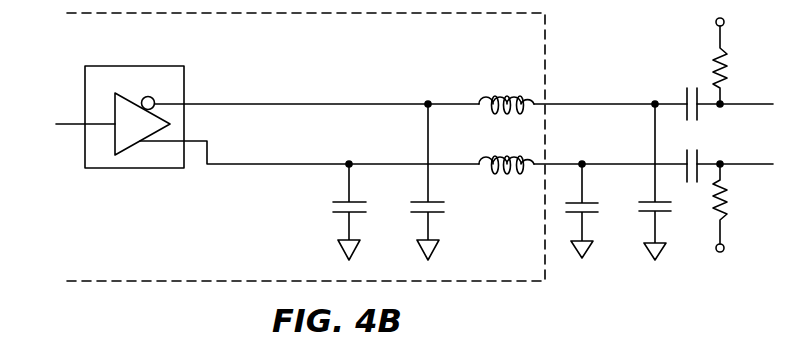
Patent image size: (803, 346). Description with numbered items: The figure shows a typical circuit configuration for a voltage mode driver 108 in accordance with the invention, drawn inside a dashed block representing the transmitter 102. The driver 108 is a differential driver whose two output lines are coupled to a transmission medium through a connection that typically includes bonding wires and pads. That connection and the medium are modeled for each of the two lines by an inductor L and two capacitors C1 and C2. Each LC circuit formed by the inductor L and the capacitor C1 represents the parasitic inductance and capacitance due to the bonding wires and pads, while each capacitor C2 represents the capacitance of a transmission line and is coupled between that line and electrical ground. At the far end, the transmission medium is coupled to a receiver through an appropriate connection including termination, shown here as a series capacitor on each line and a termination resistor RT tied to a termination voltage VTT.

The transmitter 102 is at (306, 147).
The voltage mode driver 108 is at (85, 106).
The inductor L is at (506, 119).
The capacitor C1 is at (387, 180).
The capacitor C2 is at (630, 180).
The termination resistor RT is at (735, 135).
The termination voltage VTT is at (740, 133).